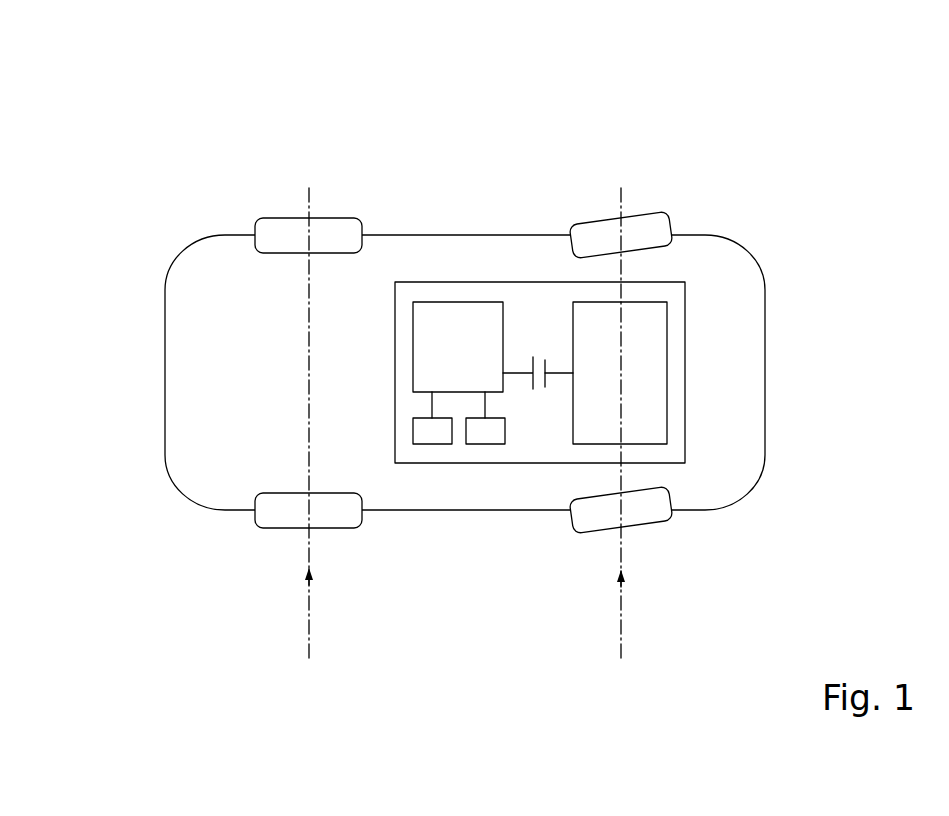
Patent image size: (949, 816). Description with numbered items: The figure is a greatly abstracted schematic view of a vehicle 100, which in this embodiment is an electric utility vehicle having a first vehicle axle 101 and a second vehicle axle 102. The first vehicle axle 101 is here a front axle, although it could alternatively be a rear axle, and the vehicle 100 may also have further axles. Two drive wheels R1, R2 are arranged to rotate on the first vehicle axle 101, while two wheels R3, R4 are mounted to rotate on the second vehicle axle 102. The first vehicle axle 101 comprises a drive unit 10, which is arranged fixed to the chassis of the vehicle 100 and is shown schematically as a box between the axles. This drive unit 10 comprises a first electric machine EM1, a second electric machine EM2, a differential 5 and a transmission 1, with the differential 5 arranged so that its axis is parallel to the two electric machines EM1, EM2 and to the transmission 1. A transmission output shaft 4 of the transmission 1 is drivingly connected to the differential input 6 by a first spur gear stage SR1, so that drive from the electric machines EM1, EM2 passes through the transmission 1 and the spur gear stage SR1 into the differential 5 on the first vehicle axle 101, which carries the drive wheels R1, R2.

The vehicle 100 is at (125, 147).
The drive unit 10 is at (422, 295).
The transmission 1 is at (457, 327).
The transmission output shaft 4 is at (517, 372).
The first spur gear stage SR1 is at (541, 330).
The differential 5 is at (648, 382).
The differential input 6 is at (560, 376).
The first electric machine EM1 is at (432, 432).
The second electric machine EM2 is at (485, 432).
The first vehicle axle 101 is at (620, 445).
The second vehicle axle 102 is at (309, 445).
The drive wheel R1 is at (648, 507).
The drive wheel R2 is at (647, 227).
The wheel R3 is at (282, 515).
The wheel R4 is at (292, 232).